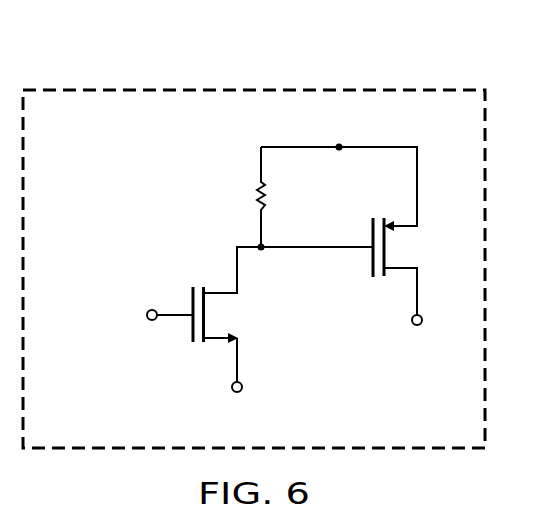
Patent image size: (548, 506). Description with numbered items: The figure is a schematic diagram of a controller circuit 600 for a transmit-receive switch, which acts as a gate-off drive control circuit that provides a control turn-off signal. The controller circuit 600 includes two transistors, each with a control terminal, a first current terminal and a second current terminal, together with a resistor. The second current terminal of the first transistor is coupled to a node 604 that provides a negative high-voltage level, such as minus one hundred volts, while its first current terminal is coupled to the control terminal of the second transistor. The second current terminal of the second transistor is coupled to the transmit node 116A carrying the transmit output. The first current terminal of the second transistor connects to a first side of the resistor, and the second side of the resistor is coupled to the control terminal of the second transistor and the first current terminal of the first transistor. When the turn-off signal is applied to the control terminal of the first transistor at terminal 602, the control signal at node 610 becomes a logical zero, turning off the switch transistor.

The controller circuit 600 is at (195, 62).
The turn off signal input terminal 602 is at (154, 303).
The node 604 is at (230, 391).
The node 610 is at (338, 152).
The transmit node 116A is at (412, 318).